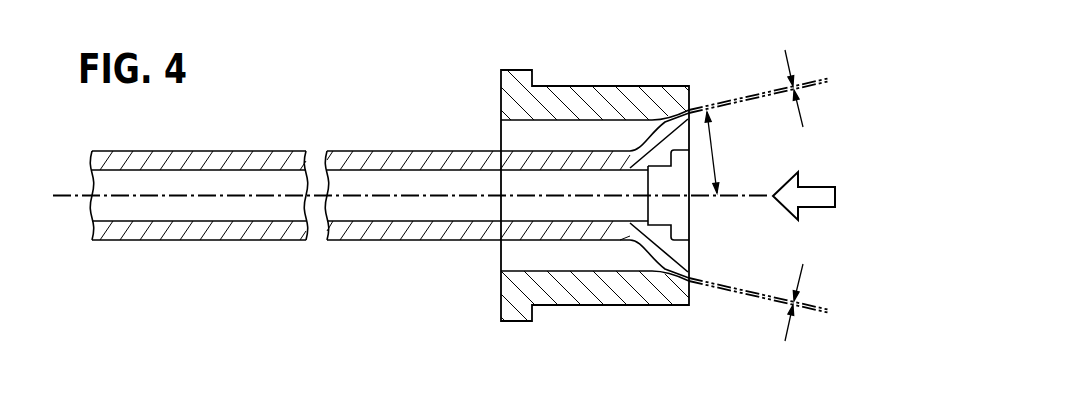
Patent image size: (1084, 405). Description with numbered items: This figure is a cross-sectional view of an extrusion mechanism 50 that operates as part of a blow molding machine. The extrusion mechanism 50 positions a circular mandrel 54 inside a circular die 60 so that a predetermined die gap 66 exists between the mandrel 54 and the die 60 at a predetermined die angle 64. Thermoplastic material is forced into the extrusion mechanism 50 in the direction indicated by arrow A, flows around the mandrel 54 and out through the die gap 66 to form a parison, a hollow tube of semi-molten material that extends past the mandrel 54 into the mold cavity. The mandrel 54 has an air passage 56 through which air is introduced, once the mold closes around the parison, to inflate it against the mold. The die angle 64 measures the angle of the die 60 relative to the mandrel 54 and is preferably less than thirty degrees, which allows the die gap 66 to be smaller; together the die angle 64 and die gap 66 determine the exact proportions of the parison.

The extrusion mechanism 50 is at (352, 62).
The mandrel 54 is at (410, 240).
The air passage 56 is at (607, 213).
The die 60 is at (651, 305).
The die angle 64 is at (716, 153).
The die gap 66 is at (787, 62).
The arrow indicating direction of thermoplastic flow A is at (73, 196).